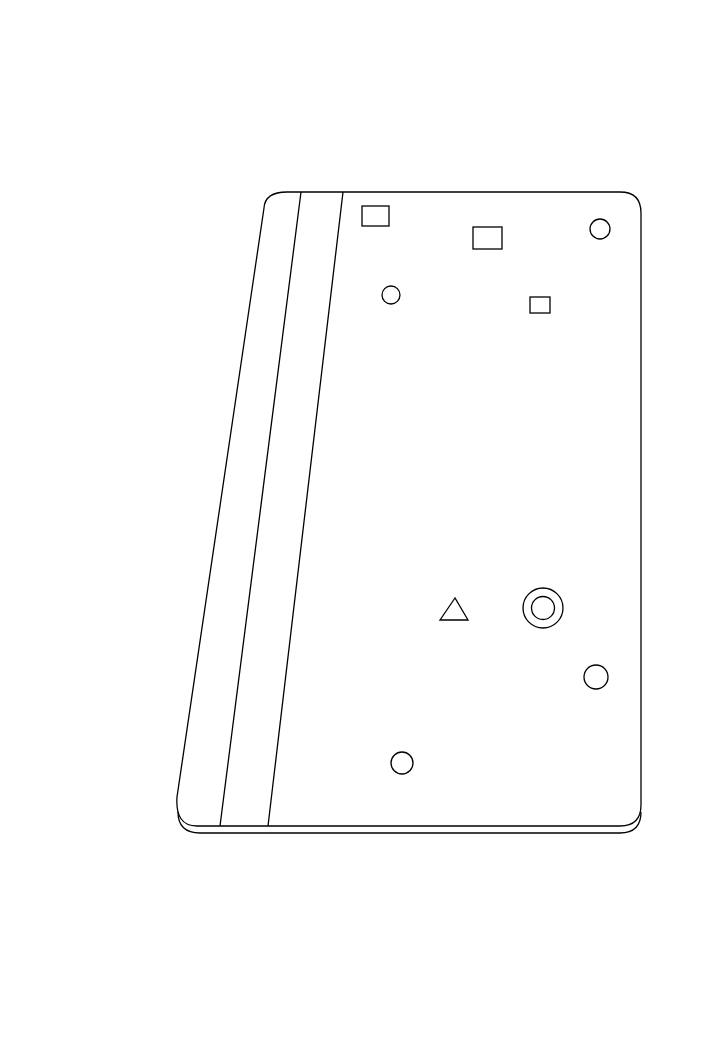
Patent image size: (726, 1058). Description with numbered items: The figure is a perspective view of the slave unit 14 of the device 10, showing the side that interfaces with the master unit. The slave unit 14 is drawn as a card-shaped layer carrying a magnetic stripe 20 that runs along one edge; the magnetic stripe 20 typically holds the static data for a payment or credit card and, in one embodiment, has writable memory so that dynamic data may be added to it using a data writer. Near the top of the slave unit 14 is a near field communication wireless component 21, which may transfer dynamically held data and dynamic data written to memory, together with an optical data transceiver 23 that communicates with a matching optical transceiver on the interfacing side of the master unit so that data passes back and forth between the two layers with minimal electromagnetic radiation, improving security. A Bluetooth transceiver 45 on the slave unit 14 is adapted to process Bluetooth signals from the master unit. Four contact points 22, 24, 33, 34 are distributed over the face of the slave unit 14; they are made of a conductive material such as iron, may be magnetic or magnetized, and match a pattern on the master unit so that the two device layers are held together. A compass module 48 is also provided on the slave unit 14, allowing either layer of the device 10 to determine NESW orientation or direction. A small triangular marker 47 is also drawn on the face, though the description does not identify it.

The device 10 is at (679, 131).
The slave unit 14 is at (417, 525).
The magnetic stripe 20 is at (298, 321).
The near field communication wireless component 21 is at (375, 206).
The contact point 22 is at (392, 286).
The optical data transceiver 23 is at (543, 297).
The contact point 24 is at (600, 219).
The Bluetooth transceiver 45 is at (481, 249).
The triangular indicator 47 is at (441, 611).
The compass module 48 is at (523, 616).
The contact point 33 is at (391, 760).
The contact point 34 is at (584, 677).